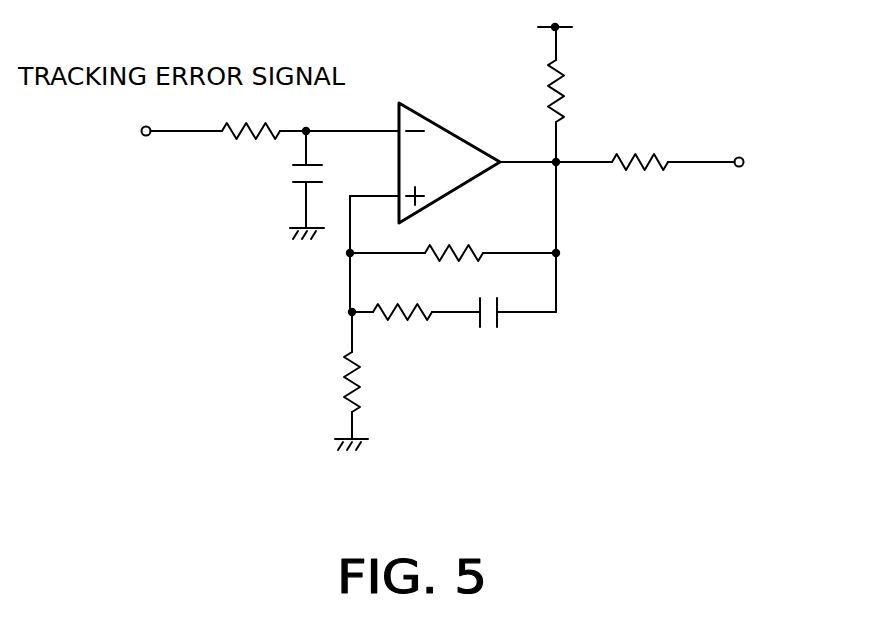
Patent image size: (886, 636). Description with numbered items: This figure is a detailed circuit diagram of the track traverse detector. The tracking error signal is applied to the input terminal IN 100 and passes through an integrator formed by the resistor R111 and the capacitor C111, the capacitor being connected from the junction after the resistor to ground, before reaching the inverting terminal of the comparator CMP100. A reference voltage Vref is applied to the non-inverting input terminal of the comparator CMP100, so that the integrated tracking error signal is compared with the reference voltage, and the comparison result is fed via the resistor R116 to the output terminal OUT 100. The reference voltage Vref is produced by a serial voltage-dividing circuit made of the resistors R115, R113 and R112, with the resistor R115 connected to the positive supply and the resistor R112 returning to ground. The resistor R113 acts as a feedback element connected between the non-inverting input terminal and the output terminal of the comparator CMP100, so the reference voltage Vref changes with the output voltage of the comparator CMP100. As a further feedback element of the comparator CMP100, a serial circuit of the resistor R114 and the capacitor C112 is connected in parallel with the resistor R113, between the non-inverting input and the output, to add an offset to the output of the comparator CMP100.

The input terminal / output terminal 100 is at (449, 148).
The comparator CMP100 is at (452, 68).
The resistor R111 is at (308, 147).
The capacitor C111 is at (330, 185).
The resistor R112 is at (377, 381).
The resistor R113 is at (453, 237).
The resistor R114 is at (390, 286).
The capacitor C112 is at (494, 298).
The resistor R115 is at (581, 88).
The resistor R116 is at (642, 145).